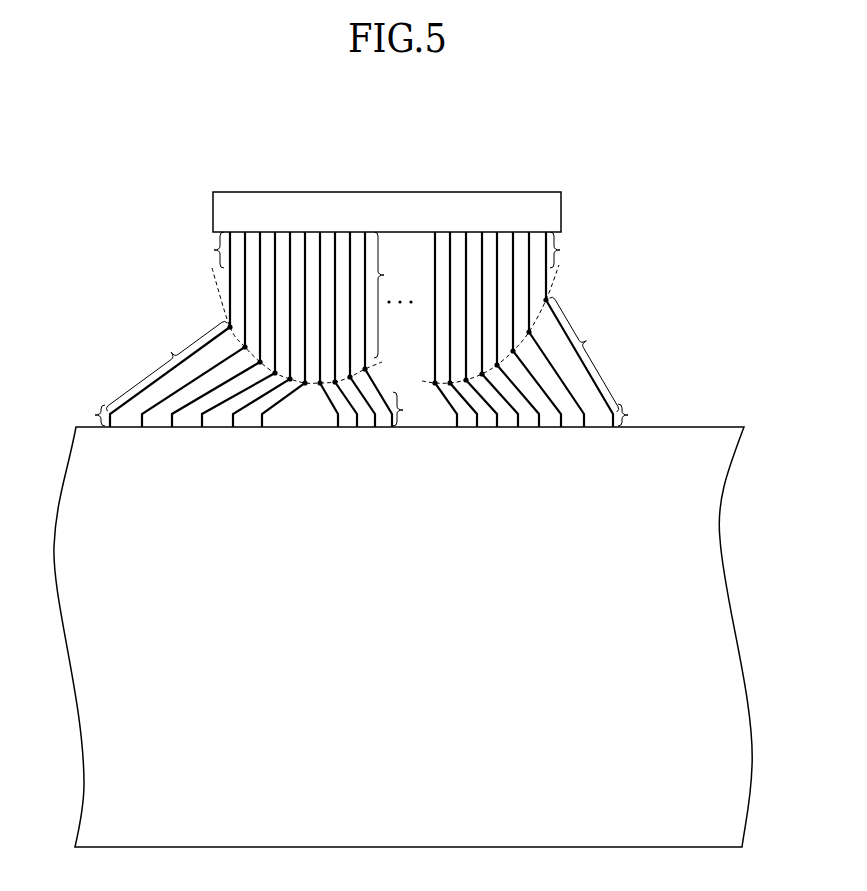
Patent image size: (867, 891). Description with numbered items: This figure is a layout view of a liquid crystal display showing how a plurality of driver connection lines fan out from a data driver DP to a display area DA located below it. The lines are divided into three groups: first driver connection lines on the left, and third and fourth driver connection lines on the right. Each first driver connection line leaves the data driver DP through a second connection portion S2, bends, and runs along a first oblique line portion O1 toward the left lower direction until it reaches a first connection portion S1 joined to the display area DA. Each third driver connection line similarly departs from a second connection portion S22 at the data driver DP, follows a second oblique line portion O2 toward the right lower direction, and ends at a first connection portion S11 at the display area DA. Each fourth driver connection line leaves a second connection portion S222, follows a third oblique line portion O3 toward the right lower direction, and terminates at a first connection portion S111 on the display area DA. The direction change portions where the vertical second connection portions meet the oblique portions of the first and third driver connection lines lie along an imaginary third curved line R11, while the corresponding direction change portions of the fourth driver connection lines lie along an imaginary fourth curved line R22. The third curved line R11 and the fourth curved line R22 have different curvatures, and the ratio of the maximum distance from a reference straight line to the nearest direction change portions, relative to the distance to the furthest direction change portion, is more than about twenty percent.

The data driver DP is at (543, 208).
The display area DA is at (403, 637).
The first connection portions S1 is at (88, 415).
The second connection portions S2 is at (211, 279).
The third curved line R11 is at (212, 273).
The first oblique line portions O1 is at (171, 352).
The second connection portions S22 is at (392, 300).
The second oblique line portions O2 is at (370, 369).
The first connection portions S11 is at (415, 411).
The second connection portions S222 is at (575, 266).
The fourth curved line R22 is at (560, 268).
The third oblique line portions O3 is at (586, 341).
The first connection portions S111 is at (643, 417).